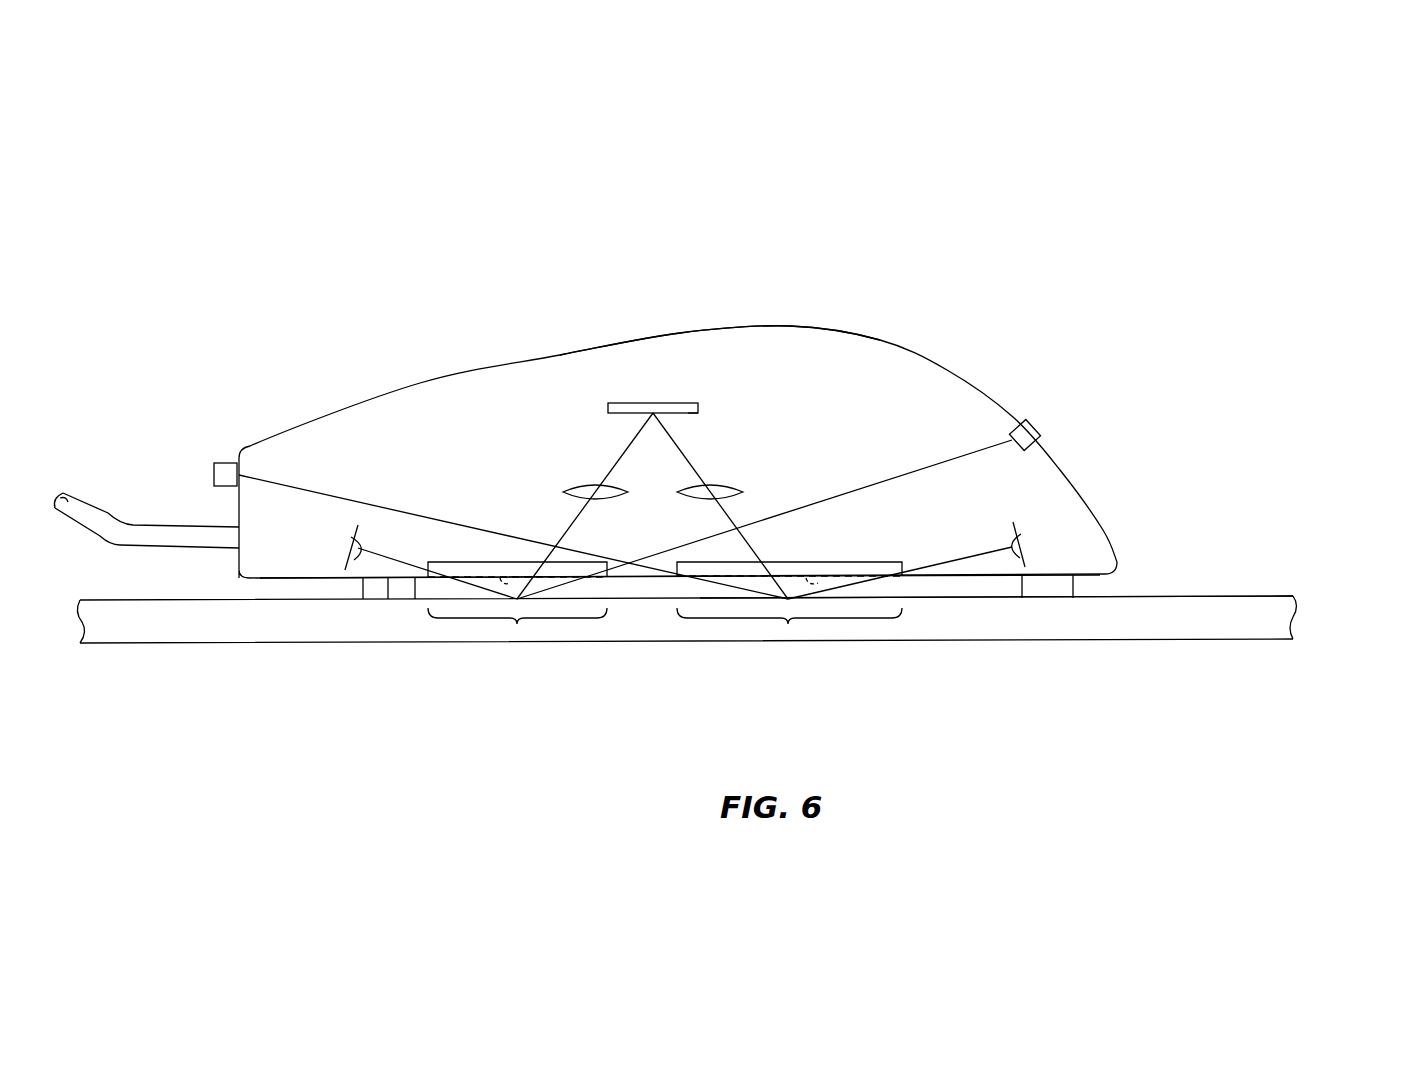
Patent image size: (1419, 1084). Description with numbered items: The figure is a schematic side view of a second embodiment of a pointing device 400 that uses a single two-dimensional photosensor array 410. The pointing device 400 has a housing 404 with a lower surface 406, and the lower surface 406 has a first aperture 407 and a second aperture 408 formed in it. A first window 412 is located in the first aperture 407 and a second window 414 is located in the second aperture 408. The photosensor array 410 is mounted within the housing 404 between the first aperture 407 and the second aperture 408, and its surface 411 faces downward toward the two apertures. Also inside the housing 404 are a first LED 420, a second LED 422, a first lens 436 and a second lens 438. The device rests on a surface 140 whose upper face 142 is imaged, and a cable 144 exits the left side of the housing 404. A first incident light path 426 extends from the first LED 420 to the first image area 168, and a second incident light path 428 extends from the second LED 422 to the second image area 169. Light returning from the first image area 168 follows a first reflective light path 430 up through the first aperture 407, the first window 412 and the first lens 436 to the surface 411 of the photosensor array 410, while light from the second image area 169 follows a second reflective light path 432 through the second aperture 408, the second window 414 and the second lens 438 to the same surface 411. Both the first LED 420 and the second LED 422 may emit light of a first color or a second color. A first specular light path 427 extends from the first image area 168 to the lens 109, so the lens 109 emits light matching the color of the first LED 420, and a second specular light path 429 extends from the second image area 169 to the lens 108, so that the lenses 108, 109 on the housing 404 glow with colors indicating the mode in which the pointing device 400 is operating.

The pointing device 400 is at (1015, 282).
The housing 404 is at (803, 324).
The lower surface 406 is at (1092, 575).
The lens 108 is at (212, 470).
The lens 109 is at (1038, 426).
The cable 144 is at (110, 518).
The second specular light path 429 is at (350, 497).
The first specular light path 427 is at (900, 474).
The photosensor array 410 is at (628, 402).
The surface of the photosensor array 411 is at (684, 415).
The first reflective light path 430 is at (627, 448).
The second reflective light path 432 is at (683, 450).
The first lens 436 is at (578, 485).
The second lens 438 is at (727, 483).
The first LED 420 is at (345, 546).
The second LED 422 is at (1025, 547).
The first window 412 is at (588, 562).
The second window 414 is at (780, 562).
The first aperture 407 is at (503, 577).
The second aperture 408 is at (820, 576).
The first incident light path 426 is at (398, 563).
The second incident light path 428 is at (957, 562).
The surface / work surface 140 is at (1306, 615).
The top surface of work surface 142 is at (1257, 595).
The first image area 168 is at (517, 624).
The second image area 169 is at (788, 624).